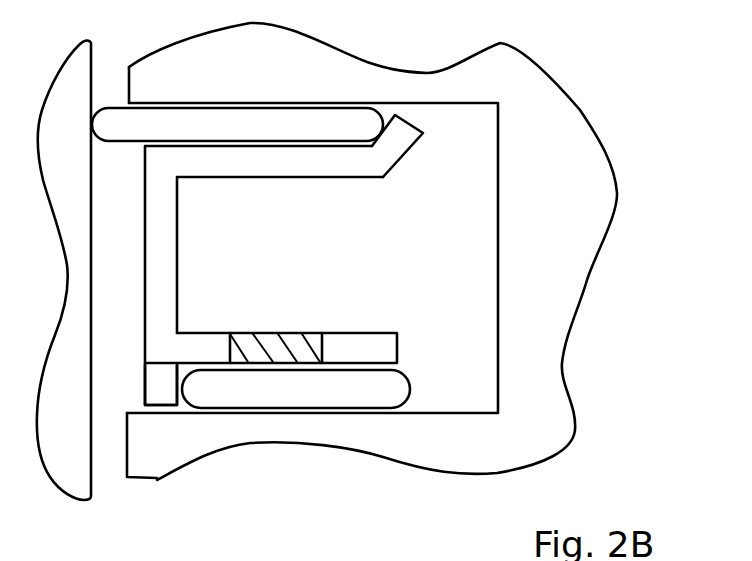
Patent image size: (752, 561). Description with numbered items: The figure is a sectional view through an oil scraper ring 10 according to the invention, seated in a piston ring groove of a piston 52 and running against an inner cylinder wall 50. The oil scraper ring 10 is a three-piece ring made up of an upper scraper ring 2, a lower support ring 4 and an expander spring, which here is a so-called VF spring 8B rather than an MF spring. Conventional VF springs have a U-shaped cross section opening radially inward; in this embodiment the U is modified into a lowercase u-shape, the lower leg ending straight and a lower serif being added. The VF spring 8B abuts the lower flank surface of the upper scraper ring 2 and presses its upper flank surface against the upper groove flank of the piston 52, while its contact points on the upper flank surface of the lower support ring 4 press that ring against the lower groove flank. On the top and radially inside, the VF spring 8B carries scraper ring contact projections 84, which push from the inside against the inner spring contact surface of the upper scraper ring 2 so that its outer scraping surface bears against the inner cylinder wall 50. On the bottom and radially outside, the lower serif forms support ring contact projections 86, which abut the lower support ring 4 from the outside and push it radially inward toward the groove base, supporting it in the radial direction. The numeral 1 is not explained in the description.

The tip body / probe body 1 is at (312, 258).
The upper scraper ring 2 is at (237, 124).
The lower support ring 4 is at (296, 389).
The VF spring 8B is at (264, 275).
The oil scraper ring 10 is at (649, 73).
The inner cylinder wall 50 is at (64, 270).
The piston 52 is at (205, 266).
The scraper ring contact projections 84 is at (396, 125).
The support ring contact projections 86 is at (158, 395).